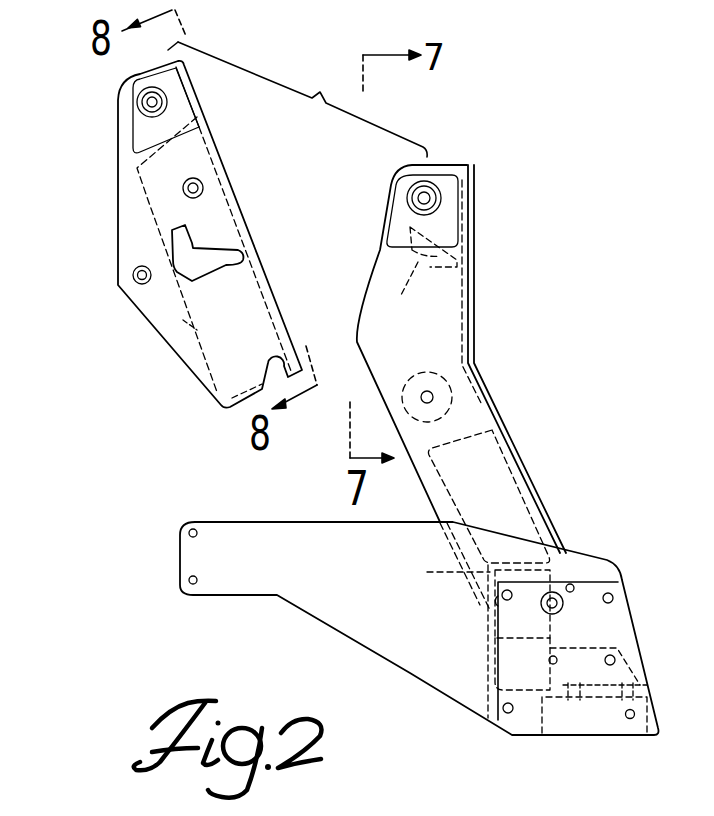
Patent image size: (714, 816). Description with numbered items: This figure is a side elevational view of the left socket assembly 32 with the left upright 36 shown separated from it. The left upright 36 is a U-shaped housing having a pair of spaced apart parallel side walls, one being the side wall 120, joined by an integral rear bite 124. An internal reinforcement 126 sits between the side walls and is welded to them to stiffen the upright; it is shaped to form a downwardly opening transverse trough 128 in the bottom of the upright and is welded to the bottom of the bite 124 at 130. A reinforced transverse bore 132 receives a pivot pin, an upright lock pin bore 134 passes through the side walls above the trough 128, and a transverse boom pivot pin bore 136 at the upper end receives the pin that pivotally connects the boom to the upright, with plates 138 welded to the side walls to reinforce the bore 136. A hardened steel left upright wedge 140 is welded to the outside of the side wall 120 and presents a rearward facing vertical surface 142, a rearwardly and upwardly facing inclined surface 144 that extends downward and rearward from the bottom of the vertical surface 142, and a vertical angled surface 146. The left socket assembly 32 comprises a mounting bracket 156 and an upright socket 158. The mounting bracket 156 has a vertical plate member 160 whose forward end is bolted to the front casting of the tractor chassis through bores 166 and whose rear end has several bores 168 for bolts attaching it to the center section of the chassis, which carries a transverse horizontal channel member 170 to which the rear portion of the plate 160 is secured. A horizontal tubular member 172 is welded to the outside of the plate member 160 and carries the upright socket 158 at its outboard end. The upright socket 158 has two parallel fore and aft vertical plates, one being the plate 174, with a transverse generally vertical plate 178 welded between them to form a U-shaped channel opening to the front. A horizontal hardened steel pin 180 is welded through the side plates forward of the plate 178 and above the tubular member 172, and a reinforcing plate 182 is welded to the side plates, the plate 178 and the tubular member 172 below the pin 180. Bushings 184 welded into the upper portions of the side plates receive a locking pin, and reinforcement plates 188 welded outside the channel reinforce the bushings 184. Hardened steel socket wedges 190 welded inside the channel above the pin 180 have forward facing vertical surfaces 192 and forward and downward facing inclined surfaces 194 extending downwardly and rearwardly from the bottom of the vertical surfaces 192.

The left socket assembly 32 is at (477, 297).
The left upright 36 is at (123, 173).
The side wall 120 is at (117, 210).
The rear bite 124 is at (217, 150).
The internal reinforcement 126 is at (175, 348).
The transverse trough 128 is at (255, 388).
The weld location 130 is at (323, 430).
The reinforced transverse bore 132 is at (133, 278).
The upright lock pin bore 134 is at (200, 192).
The transverse boom pivot pin bore 136 is at (143, 105).
The plate 138 is at (133, 132).
The left upright wedge 140 is at (178, 250).
The vertical surface 142 is at (187, 230).
The inclined surface 144 is at (216, 247).
The vertical angled surface 146 is at (235, 262).
The mounting bracket 156 is at (237, 575).
The upright socket 158 is at (537, 487).
The vertical plate member 160 is at (390, 627).
The bore 166 is at (189, 535).
The bore 168 is at (630, 719).
The transverse horizontal channel member 170 is at (552, 717).
The horizontal tubular member 172 is at (487, 672).
The vertical plate 174 is at (443, 347).
The transverse vertical plate 178 is at (473, 168).
The hardened steel pin 180 is at (433, 397).
The reinforcing plate 182 is at (418, 498).
The bushing 184 is at (440, 198).
The reinforcement plate 188 is at (447, 218).
The socket wedge 190 is at (470, 243).
The vertical surface 192 is at (410, 250).
The inclined surface 194 is at (398, 298).